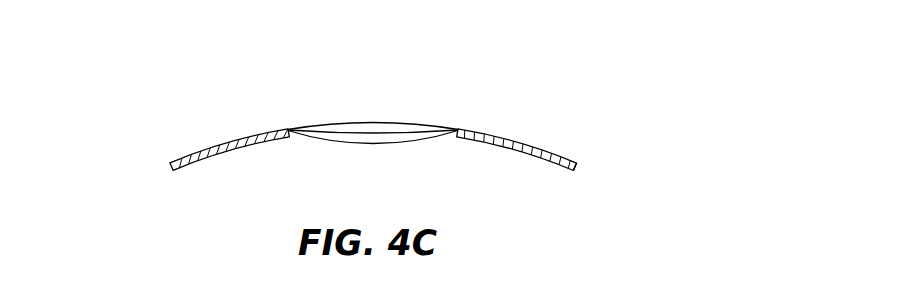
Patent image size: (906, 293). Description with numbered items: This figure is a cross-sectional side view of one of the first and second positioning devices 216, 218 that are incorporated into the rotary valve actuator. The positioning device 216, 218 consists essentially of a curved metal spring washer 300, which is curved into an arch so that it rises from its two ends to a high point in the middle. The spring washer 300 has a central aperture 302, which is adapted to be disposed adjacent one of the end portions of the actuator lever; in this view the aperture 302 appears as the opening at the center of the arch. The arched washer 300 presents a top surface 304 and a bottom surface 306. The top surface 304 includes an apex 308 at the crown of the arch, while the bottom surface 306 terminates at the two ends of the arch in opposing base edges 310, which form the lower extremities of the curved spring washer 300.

The first positioning device 216 is at (443, 89).
The second positioning device 218 is at (565, 58).
The curved metal spring washer 300 is at (373, 154).
The central aperture 302 is at (445, 127).
The top surface 304 is at (517, 154).
The bottom surface 306 is at (553, 164).
The apex 308 is at (373, 98).
The opposing base edges 310 is at (172, 174).